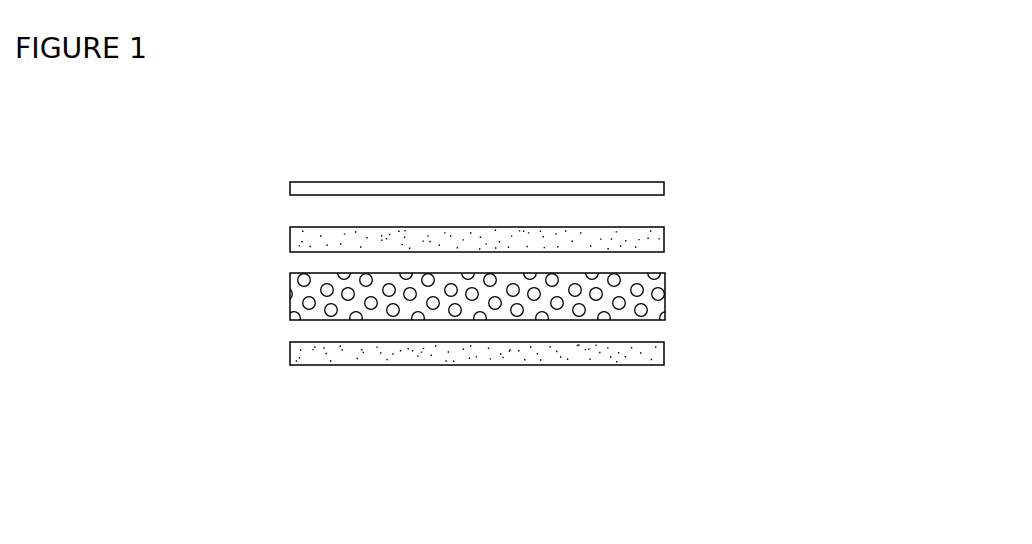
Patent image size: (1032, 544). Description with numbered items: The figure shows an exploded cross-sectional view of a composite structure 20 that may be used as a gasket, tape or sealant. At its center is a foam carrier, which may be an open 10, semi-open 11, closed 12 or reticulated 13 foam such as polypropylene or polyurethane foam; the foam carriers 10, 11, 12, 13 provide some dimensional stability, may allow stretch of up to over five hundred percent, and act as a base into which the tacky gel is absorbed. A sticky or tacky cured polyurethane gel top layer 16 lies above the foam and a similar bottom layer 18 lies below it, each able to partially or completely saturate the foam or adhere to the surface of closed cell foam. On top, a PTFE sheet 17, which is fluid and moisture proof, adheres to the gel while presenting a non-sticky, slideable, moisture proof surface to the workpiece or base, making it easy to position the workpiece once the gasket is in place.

The open foam carrier 10 is at (466, 381).
The semi-open foam carrier 11 is at (466, 381).
The closed foam carrier 12 is at (466, 381).
The reticulated foam carrier 13 is at (290, 288).
The cured polyurethane gel top layer 16 is at (290, 240).
The PTFE sheet 17 is at (366, 183).
The bottom layer 18 is at (290, 353).
The composite structure 20 is at (514, 277).